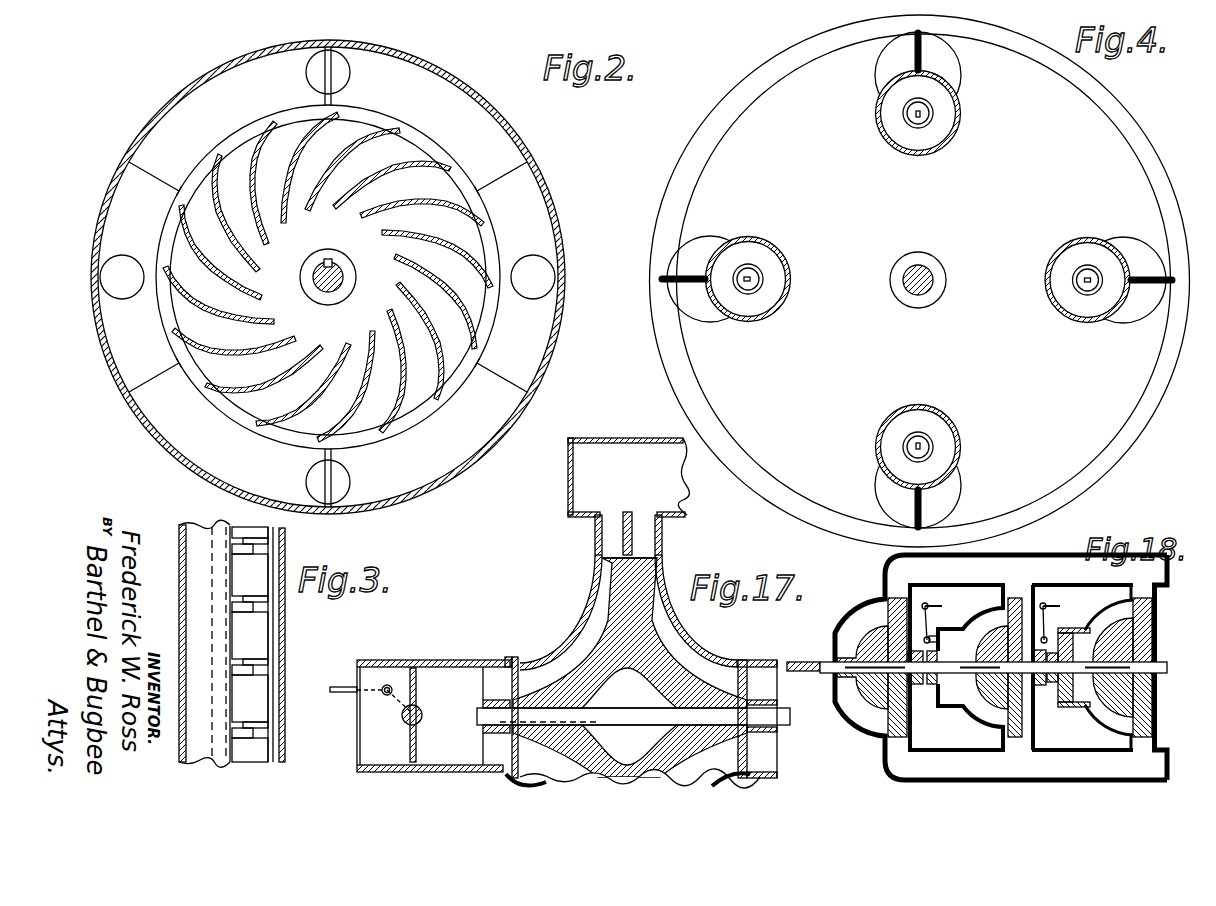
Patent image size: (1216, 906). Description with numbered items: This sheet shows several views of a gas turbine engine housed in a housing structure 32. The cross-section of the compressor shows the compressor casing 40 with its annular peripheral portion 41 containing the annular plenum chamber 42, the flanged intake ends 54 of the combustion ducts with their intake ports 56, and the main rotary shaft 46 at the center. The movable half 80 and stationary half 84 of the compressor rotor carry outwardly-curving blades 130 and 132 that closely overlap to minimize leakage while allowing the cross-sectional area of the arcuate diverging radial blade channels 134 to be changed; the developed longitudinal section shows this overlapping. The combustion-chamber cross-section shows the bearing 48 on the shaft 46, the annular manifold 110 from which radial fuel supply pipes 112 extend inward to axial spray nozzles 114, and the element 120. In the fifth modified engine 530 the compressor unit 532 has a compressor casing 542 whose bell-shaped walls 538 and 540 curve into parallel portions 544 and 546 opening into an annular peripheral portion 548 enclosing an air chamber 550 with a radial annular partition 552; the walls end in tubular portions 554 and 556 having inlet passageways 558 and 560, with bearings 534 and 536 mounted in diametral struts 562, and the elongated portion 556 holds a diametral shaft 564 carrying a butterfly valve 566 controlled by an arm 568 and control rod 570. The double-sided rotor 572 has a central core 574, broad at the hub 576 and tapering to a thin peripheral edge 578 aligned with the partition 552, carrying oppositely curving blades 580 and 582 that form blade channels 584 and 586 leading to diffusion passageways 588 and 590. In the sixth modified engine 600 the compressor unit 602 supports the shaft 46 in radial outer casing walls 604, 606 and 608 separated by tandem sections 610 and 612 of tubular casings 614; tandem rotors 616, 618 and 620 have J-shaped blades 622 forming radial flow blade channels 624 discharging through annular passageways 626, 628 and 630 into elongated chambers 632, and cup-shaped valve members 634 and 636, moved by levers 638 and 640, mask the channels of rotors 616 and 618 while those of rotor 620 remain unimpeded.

In FIG. 2, the annular outer or peripheral portion 41 is at (504, 109).
In FIG. 2, the annular plenum chamber 42 is at (445, 96).
In FIG. 2, the stationary half of compressor rotor 84 is at (491, 225).
In FIG. 3, the stationary half of compressor rotor 84 is at (275, 690).
In FIG. 2, the intake ports 56 is at (345, 70).
In FIG. 2, the main rotary shaft 46 is at (333, 292).
In FIG. 4, the main rotary shaft 46 is at (913, 305).
In FIG. 17, the main rotary shaft 46 is at (783, 718).
In FIG. 18, the main rotary shaft 46 is at (1164, 662).
In FIG. 2, the blades of stationary rotor half 132 is at (381, 172).
In FIG. 3, the blades of stationary rotor half 132 is at (256, 598).
In FIG. 2, the arcuate diverging radial blade channels 134 is at (418, 404).
In FIG. 3, the arcuate diverging radial blade channels 134 is at (257, 647).
In FIG. 4, the annular manifold or distribution pipe 110 is at (668, 206).
In FIG. 4, the bearing 48 is at (936, 300).
In FIG. 4, the casing or housing structure 32 is at (948, 147).
In FIG. 4, the spray nozzles 114 is at (934, 113).
In FIG. 4, the bearing pin 120 is at (913, 130).
In FIG. 4, the intake ends of combustion ducts 54 is at (884, 80).
In FIG. 4, the radial fuel supply pipes 112 is at (928, 60).
In FIG. 3, the movable half of compressor rotor 80 is at (180, 624).
In FIG. 3, the blades of movable rotor half 130 is at (238, 614).
In FIG. 3, the compressor casing 40 is at (287, 613).
In FIG. 17, the gas turbine engine 530 is at (604, 431).
In FIG. 17, the compressor unit 532 is at (563, 434).
In FIG. 17, the annular peripheral portion 548 is at (567, 472).
In FIG. 17, the annular peripheral air chamber 550 is at (622, 452).
In FIG. 17, the radial annular partition 552 is at (628, 510).
In FIG. 17, the diffusion passageway 590 is at (612, 525).
In FIG. 17, the diffusion passageway 588 is at (645, 525).
In FIG. 17, the parallel portion of casing wall 546 is at (592, 524).
In FIG. 17, the compressor casing 542 is at (585, 548).
In FIG. 17, the parallel portion of casing wall 544 is at (662, 527).
In FIG. 17, the thin peripheral edge 578 is at (640, 558).
In FIG. 17, the bell-shaped casing wall 540 is at (592, 570).
In FIG. 17, the bell-shaped casing wall 538 is at (668, 568).
In FIG. 17, the blade channels 586 is at (597, 618).
In FIG. 17, the blade channels 584 is at (668, 620).
In FIG. 17, the double-sided compressor rotor 572 is at (690, 660).
In FIG. 17, the hub 576 is at (553, 694).
In FIG. 17, the central core 574 is at (625, 672).
In FIG. 17, the blades 580 is at (745, 662).
In FIG. 17, the inlet passageway 558 is at (790, 662).
In FIG. 17, the bearing 534 is at (765, 702).
In FIG. 17, the tubular portion 554 is at (770, 778).
In FIG. 17, the blades 582 is at (516, 656).
In FIG. 17, the tubular portion 556 is at (500, 658).
In FIG. 17, the inlet passageway 560 is at (495, 668).
In FIG. 17, the diametral struts 562 is at (480, 694).
In FIG. 17, the control rod 570 is at (332, 686).
In FIG. 17, the arm 568 is at (380, 703).
In FIG. 17, the butterfly valve 566 is at (410, 748).
In FIG. 17, the diametral shaft 564 is at (420, 725).
In FIG. 17, the bearing 536 is at (488, 733).
In FIG. 18, the gas turbine engine 600 is at (873, 571).
In FIG. 18, the compressor unit 602 is at (873, 595).
In FIG. 18, the radial flow blade channels 624 is at (878, 614).
In FIG. 18, the compressor rotor 620 is at (895, 692).
In FIG. 18, the radial outer casing wall 608 is at (915, 600).
In FIG. 18, the annular passageway 630 is at (898, 592).
In FIG. 18, the lever 640 is at (932, 614).
In FIG. 18, the cup-shaped hollow cylindrical valve member 636 is at (942, 627).
In FIG. 18, the annular passageway 628 is at (1014, 592).
In FIG. 18, the axially-elongated chambers 632 is at (990, 558).
In FIG. 18, the tubular casings or conduits 614 is at (1052, 556).
In FIG. 18, the radial outer casing wall 606 is at (1036, 590).
In FIG. 18, the lever 638 is at (1048, 610).
In FIG. 18, the cup-shaped hollow cylindrical valve member 634 is at (1064, 628).
In FIG. 18, the compressor rotor 616 is at (1140, 652).
In FIG. 18, the annular passageway 626 is at (1134, 594).
In FIG. 18, the radial outer casing wall 604 is at (1163, 604).
In FIG. 18, the blades 622 is at (882, 742).
In FIG. 18, the compressor rotor 618 is at (1033, 706).
In FIG. 18, the tandem section of tubular casings 612 is at (925, 760).
In FIG. 18, the tandem section of tubular casings 610 is at (1090, 760).